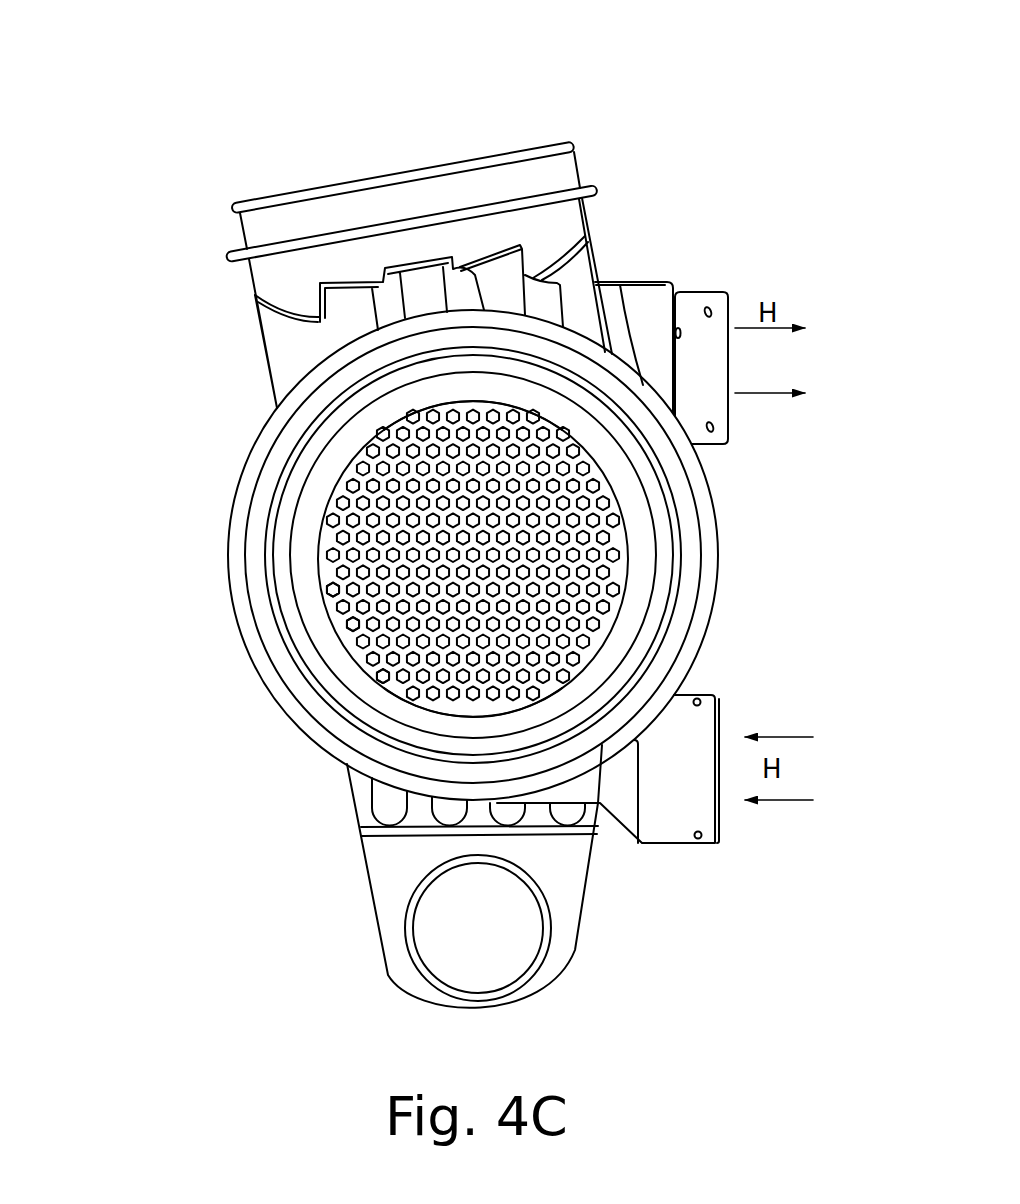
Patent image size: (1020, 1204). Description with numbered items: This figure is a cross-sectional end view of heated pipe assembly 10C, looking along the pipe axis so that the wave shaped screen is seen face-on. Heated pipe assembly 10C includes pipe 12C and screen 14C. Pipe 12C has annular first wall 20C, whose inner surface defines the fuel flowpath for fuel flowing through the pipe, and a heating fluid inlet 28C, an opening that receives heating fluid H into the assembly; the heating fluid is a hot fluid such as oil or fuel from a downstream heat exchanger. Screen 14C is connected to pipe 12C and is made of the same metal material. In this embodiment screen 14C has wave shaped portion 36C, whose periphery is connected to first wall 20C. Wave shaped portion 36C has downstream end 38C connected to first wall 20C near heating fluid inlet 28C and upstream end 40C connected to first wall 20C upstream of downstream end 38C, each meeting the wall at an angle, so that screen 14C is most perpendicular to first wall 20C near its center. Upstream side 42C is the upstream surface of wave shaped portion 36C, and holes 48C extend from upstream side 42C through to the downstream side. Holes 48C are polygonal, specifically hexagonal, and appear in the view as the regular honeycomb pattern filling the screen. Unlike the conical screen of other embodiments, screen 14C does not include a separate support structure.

The heated pipe assembly 10C is at (140, 148).
The pipe 12C is at (740, 508).
The screen 14C is at (305, 557).
The first wall 20C is at (292, 468).
The heating fluid inlet 28C is at (720, 813).
The wave shaped portion 36C is at (378, 668).
The downstream end 38C is at (473, 408).
The upstream end 40C is at (523, 720).
The upstream side 42C is at (575, 570).
The holes 48C is at (355, 628).